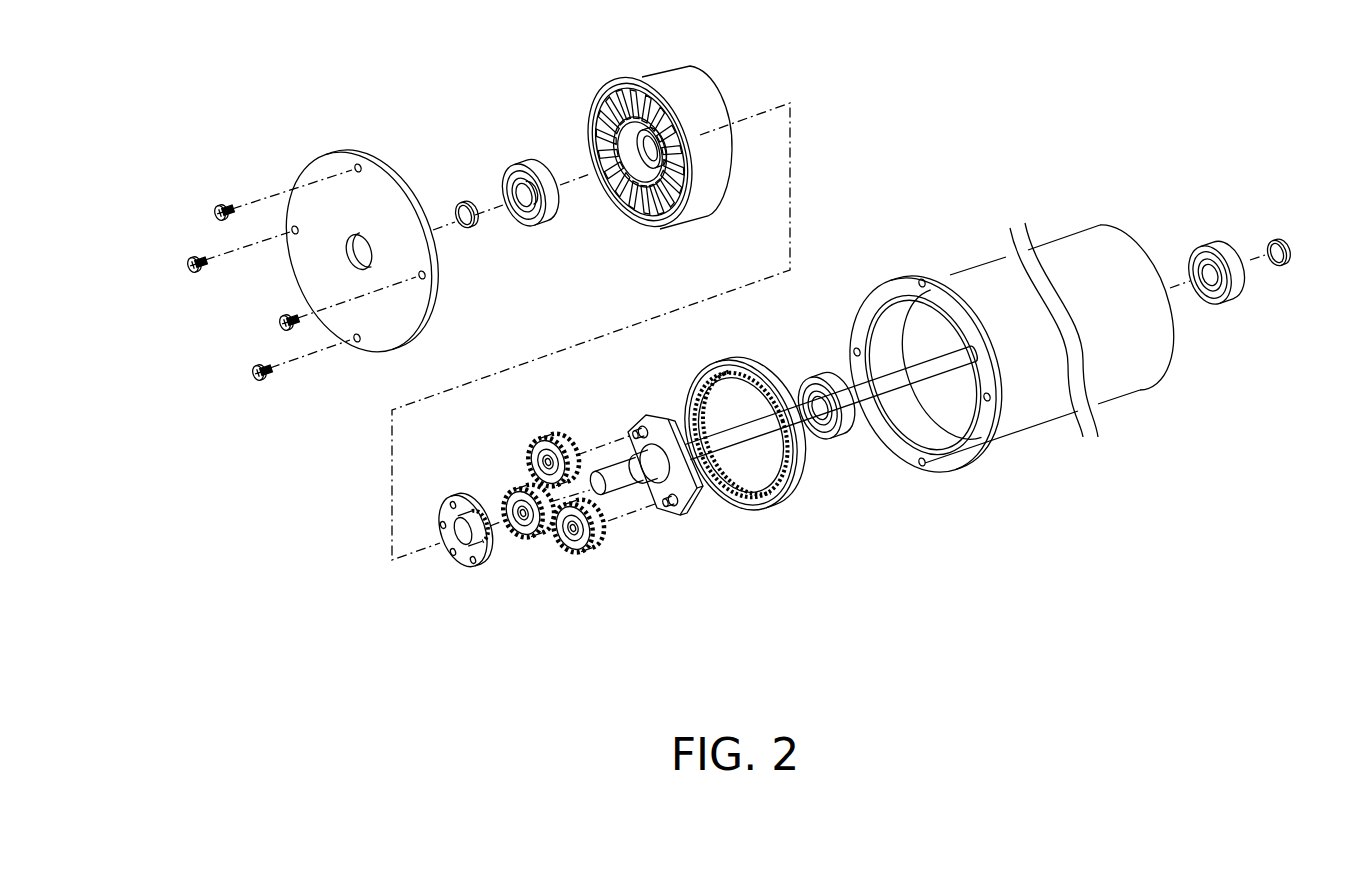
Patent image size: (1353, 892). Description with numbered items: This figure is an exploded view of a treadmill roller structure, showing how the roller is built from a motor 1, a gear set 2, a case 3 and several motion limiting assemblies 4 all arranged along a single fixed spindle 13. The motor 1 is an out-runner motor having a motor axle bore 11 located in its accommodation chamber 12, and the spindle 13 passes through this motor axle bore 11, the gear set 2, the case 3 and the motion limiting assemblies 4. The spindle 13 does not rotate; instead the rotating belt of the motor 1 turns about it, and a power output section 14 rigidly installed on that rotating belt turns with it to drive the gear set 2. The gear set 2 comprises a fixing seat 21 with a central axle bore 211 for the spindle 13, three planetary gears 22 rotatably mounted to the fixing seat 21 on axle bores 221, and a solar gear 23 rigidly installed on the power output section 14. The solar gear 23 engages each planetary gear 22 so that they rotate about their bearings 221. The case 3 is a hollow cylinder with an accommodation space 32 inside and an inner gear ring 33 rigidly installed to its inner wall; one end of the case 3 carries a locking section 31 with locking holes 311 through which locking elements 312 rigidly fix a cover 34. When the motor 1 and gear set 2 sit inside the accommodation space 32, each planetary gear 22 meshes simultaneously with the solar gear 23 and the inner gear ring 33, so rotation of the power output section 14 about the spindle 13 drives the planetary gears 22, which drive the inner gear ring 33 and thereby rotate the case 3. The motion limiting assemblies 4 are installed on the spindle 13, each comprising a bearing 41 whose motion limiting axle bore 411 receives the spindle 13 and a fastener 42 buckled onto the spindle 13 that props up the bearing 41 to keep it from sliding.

The motor 1 is at (659, 134).
The motor axle bore 11 is at (627, 125).
The accommodation chamber 12 is at (628, 148).
The spindle 13 is at (745, 440).
The power output section 14 is at (460, 503).
The gear set 2 is at (720, 503).
The fixing seat 21 is at (648, 495).
The axle bore 211 is at (638, 431).
The planetary gears 22 is at (582, 553).
The axle bores 221 is at (676, 507).
The solar gear 23 is at (510, 571).
The case 3 is at (680, 324).
The locking section 31 is at (938, 293).
The locking holes 311 is at (920, 466).
The locking element 312 is at (222, 207).
The accommodation space 32 is at (900, 342).
The inner gear ring 33 is at (772, 387).
The cover 34 is at (372, 185).
The motion limiting assemblies 4 is at (871, 302).
The bearing 41 is at (558, 207).
The motion limiting axle bore 411 is at (522, 205).
The fastener 42 is at (466, 202).